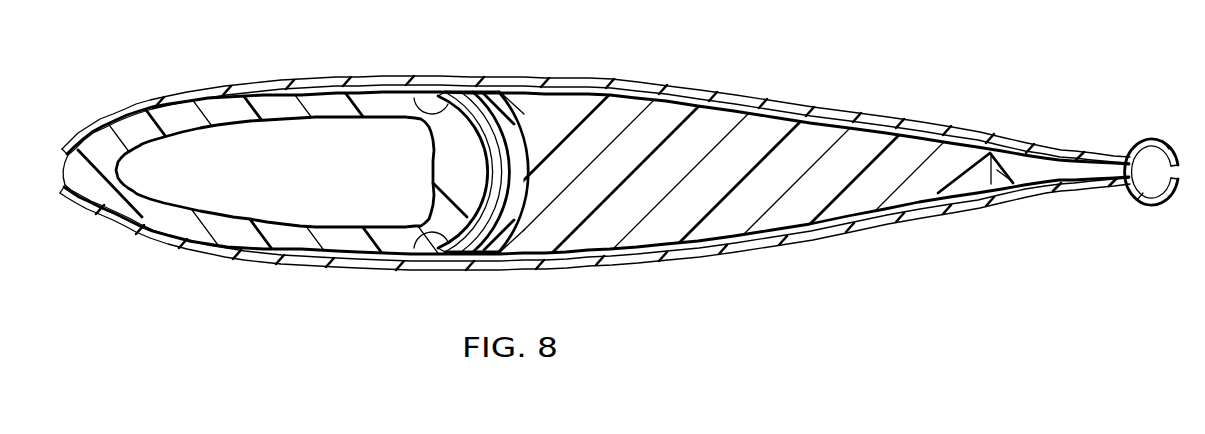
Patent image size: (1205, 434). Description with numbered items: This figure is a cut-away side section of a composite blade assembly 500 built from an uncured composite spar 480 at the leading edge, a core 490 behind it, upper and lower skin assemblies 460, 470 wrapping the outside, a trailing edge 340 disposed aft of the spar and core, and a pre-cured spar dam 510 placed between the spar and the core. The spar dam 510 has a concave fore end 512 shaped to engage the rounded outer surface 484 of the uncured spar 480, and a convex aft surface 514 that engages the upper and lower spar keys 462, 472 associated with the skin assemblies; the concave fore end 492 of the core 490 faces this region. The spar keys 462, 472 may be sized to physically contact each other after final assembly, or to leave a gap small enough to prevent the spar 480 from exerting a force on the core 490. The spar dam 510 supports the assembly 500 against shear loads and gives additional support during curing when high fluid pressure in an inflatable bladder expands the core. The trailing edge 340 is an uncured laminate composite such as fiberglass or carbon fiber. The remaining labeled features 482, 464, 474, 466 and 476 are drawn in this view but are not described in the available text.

The composite blade assembly 500 is at (619, 160).
The upper skin assembly 460 is at (595, 114).
The lower skin assembly 470 is at (710, 261).
The rounded outer surface 484 is at (305, 89).
The uncured composite spar 480 is at (317, 112).
The lower liner ply 482 is at (327, 236).
The core 490 is at (770, 185).
The trailing edge 340 is at (1010, 165).
The pre-cured spar dam 510 is at (477, 99).
The concave fore end 512 is at (483, 128).
The concave fore end 492 is at (490, 160).
The convex aft surface 514 is at (529, 172).
The upper spar key 462 is at (478, 94).
The lower spar key 472 is at (470, 254).
The upper ply return 464 is at (418, 100).
The lower ply return 474 is at (430, 250).
The upper filler wedge 466 is at (506, 94).
The lower filler wedge 476 is at (518, 252).